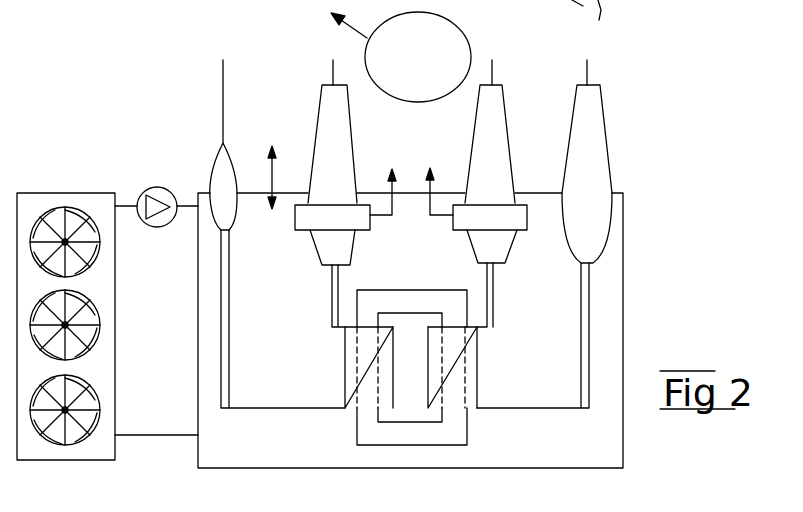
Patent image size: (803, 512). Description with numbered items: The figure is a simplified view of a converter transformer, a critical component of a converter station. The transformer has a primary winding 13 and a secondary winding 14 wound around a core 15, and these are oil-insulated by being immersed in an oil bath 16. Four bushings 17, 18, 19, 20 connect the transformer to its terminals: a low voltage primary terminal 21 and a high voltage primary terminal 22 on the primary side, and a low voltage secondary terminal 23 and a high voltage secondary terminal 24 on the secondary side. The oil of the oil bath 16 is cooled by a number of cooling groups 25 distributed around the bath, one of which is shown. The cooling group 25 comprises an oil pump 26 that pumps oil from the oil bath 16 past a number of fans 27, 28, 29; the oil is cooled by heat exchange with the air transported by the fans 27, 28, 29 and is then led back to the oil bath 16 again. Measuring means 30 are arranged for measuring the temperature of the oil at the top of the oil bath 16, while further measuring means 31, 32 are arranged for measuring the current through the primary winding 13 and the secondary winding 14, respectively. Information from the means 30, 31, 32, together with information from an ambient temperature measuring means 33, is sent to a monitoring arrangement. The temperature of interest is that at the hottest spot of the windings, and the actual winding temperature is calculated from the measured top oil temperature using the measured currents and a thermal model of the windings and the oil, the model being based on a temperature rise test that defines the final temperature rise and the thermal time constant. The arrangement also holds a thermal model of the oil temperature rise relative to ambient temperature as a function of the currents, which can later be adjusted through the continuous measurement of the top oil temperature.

The primary winding 13 is at (358, 372).
The secondary winding 14 is at (479, 372).
The core 15 is at (407, 298).
The oil bath 16 is at (624, 300).
The bushing 17 is at (236, 160).
The bushing 18 is at (353, 157).
The bushing 19 is at (511, 140).
The bushing 20 is at (609, 140).
The low voltage primary terminal 21 is at (223, 72).
The high voltage primary terminal 22 is at (333, 72).
The low voltage secondary terminal 23 is at (587, 68).
The high voltage secondary terminal 24 is at (492, 70).
The cooling group 25 is at (100, 192).
The oil pump 26 is at (157, 187).
The fan 27 is at (100, 243).
The fan 28 is at (100, 324).
The fan 29 is at (100, 402).
The oil temperature measuring means 30 is at (293, 172).
The primary current measuring means 31 is at (366, 232).
The secondary current measuring means 32 is at (525, 232).
The ambient temperature measuring means 33 is at (455, 40).